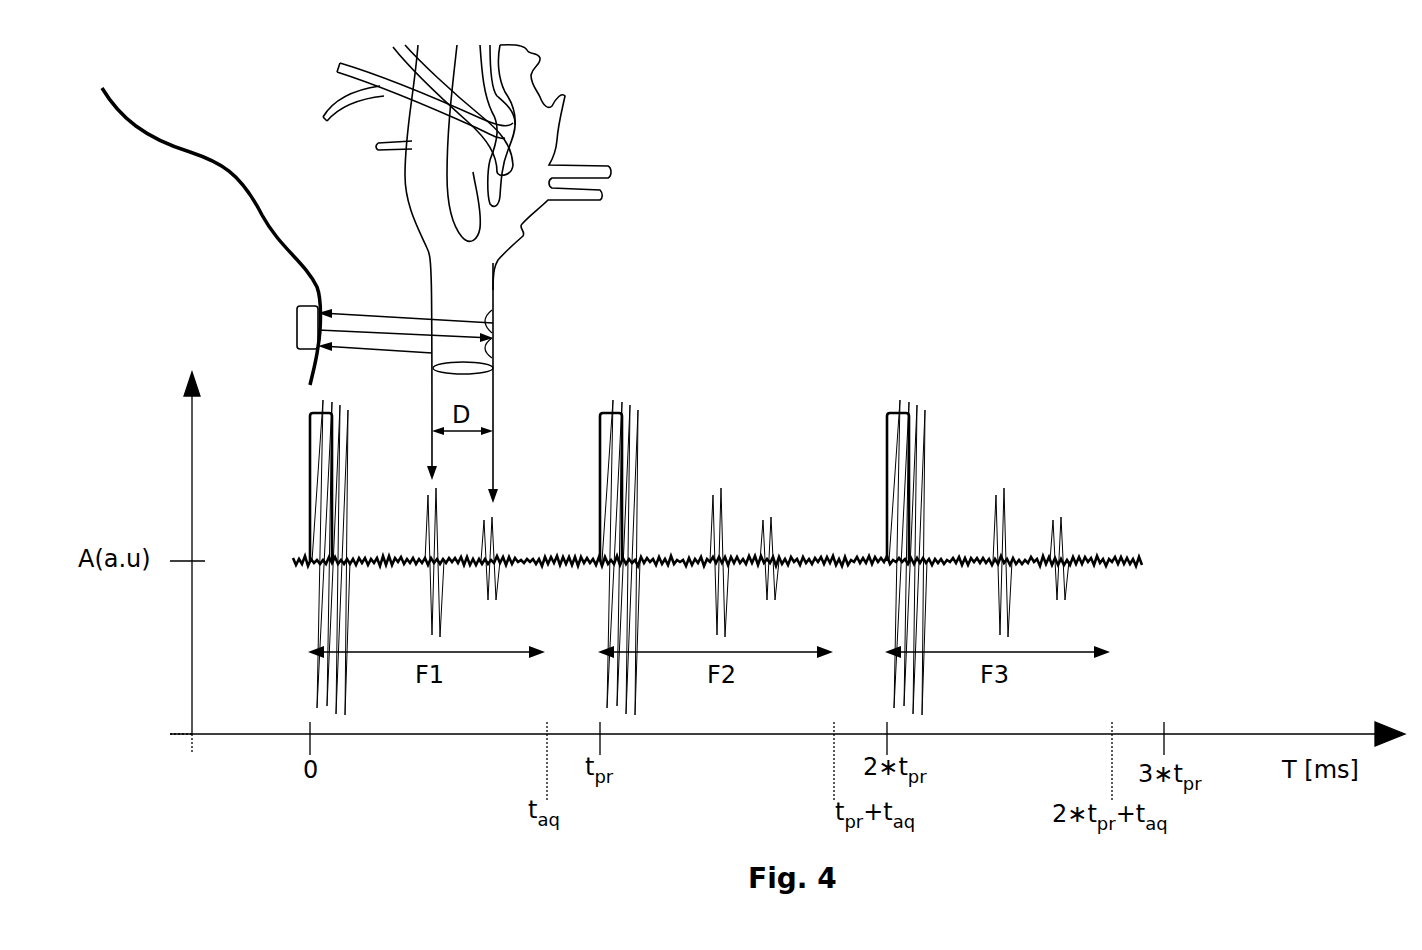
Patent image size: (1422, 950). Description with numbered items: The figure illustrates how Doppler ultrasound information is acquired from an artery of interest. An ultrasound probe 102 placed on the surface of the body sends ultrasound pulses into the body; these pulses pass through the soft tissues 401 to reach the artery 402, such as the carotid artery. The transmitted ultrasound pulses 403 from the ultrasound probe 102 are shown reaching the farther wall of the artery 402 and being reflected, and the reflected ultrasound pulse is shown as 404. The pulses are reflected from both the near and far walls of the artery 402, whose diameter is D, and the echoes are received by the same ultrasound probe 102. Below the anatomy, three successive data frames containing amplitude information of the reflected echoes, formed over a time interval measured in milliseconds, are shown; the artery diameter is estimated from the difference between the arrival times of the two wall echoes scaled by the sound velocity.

The soft tissues 401 is at (244, 178).
The ultrasound probe 102 is at (296, 327).
The artery 402 is at (493, 267).
The reflected ultrasound pulse 404 is at (493, 320).
The ultrasound pulses 403 is at (493, 358).